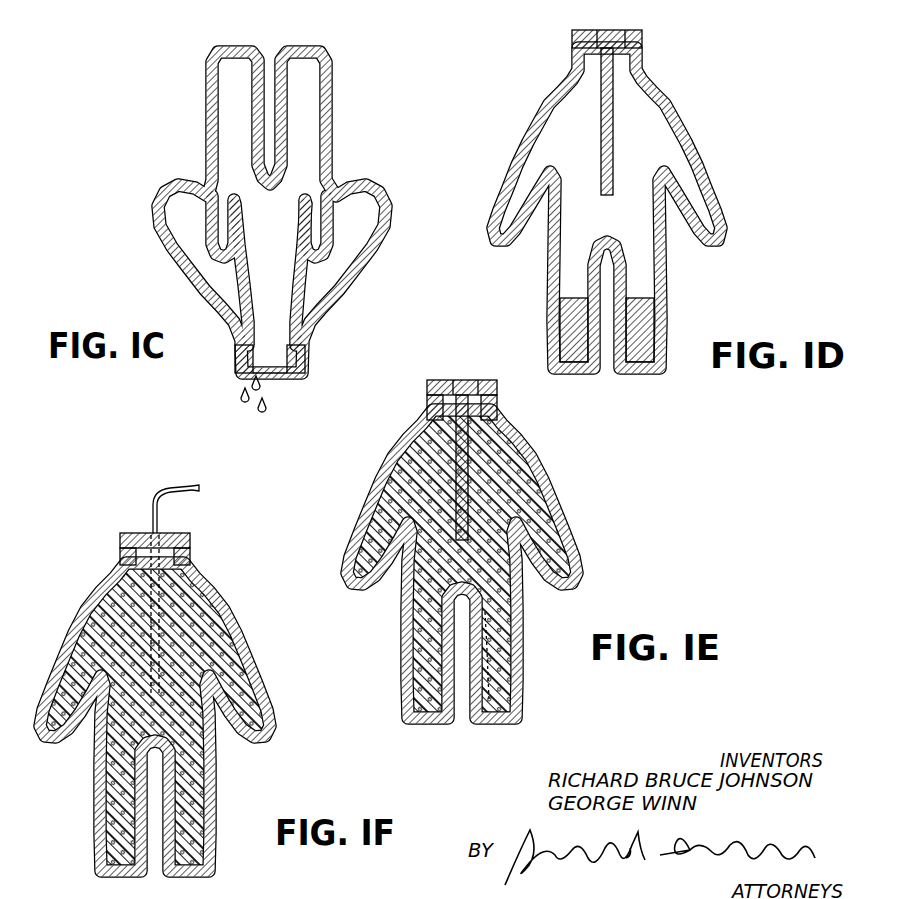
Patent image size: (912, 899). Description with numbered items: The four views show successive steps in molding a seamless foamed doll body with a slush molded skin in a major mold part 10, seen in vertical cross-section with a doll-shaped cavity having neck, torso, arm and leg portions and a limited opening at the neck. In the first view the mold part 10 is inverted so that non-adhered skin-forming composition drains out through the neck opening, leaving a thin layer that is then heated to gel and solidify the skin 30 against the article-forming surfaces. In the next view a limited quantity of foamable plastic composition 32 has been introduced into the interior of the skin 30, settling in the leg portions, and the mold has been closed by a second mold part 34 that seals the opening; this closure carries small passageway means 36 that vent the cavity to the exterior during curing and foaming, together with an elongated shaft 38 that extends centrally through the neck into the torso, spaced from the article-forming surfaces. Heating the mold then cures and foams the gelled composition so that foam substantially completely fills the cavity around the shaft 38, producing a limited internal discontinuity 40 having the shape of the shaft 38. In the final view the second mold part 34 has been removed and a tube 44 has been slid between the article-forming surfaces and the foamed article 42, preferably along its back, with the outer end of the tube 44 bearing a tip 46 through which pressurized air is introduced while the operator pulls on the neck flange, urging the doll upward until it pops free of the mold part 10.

In FIG. 1C, the major mold part 10 is at (272, 232).
In FIG. 1D, the major mold part 10 is at (613, 186).
In FIG. 1E, the major mold part 10 is at (470, 531).
In FIG. 1F, the major mold part 10 is at (158, 670).
In FIG. 1C, the skin 30 is at (305, 210).
In FIG. 1D, the skin 30 is at (552, 116).
In FIG. 1E, the skin 30 is at (410, 645).
In FIG. 1F, the skin 30 is at (97, 793).
In FIG. 1D, the foamable plastic composition 32 is at (660, 307).
In FIG. 1D, the second mold part 34 is at (581, 29).
In FIG. 1E, the second mold part 34 is at (440, 376).
In FIG. 1F, the second mold part 34 is at (155, 549).
In FIG. 1D, the passageway means 36 is at (624, 31).
In FIG. 1E, the passageway means 36 is at (478, 382).
In FIG. 1D, the elongated shaft 38 is at (613, 143).
In FIG. 1E, the elongated shaft 38 is at (474, 440).
In FIG. 1E, the limited internal discontinuity 40 is at (523, 451).
In FIG. 1F, the limited internal discontinuity 40 is at (193, 577).
In FIG. 1E, the foamed article 42 is at (490, 637).
In FIG. 1F, the foamed article 42 is at (217, 793).
In FIG. 1F, the tube 44 is at (166, 489).
In FIG. 1F, the tube tip 46 is at (200, 487).